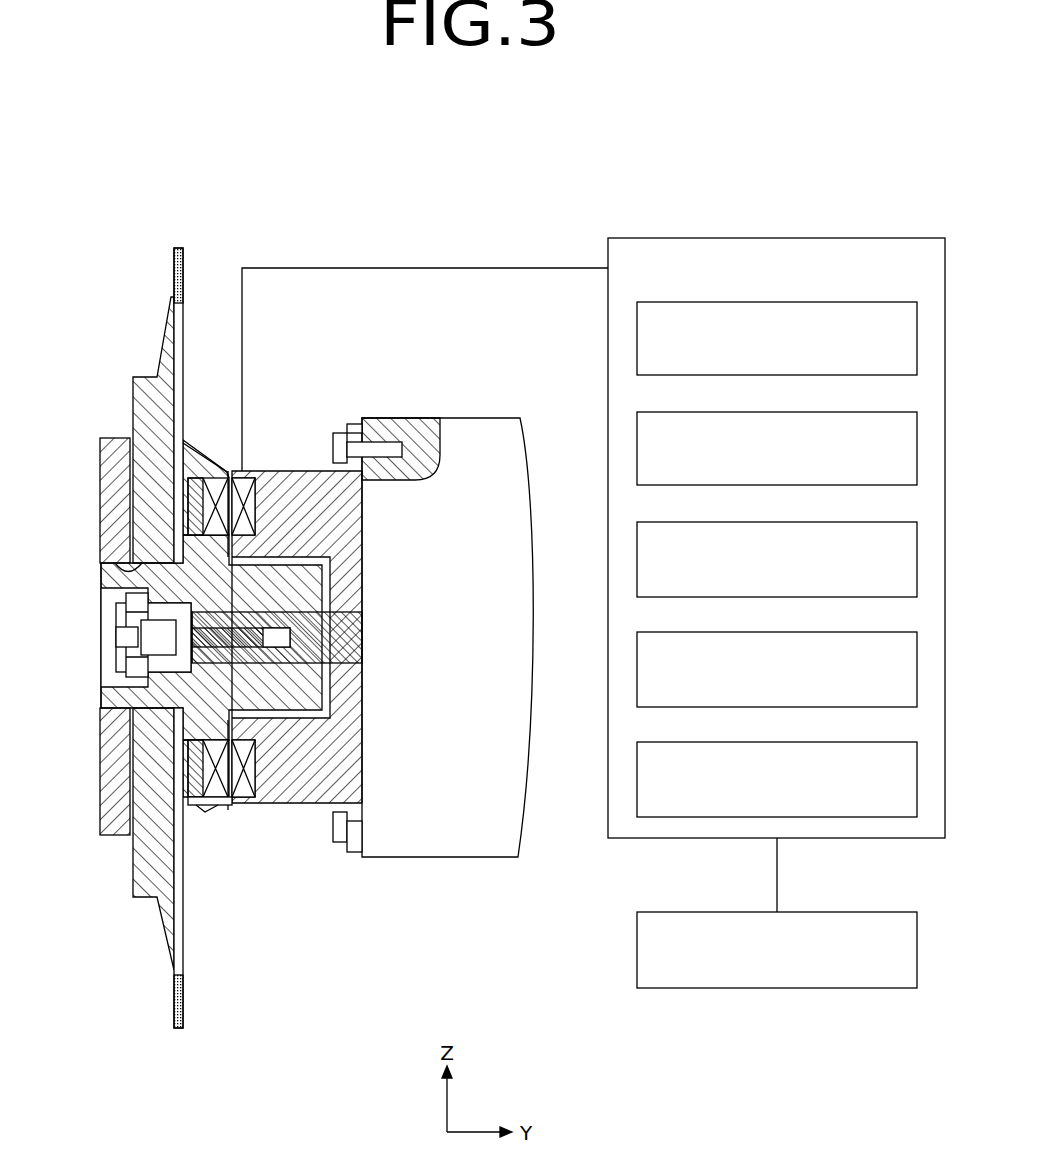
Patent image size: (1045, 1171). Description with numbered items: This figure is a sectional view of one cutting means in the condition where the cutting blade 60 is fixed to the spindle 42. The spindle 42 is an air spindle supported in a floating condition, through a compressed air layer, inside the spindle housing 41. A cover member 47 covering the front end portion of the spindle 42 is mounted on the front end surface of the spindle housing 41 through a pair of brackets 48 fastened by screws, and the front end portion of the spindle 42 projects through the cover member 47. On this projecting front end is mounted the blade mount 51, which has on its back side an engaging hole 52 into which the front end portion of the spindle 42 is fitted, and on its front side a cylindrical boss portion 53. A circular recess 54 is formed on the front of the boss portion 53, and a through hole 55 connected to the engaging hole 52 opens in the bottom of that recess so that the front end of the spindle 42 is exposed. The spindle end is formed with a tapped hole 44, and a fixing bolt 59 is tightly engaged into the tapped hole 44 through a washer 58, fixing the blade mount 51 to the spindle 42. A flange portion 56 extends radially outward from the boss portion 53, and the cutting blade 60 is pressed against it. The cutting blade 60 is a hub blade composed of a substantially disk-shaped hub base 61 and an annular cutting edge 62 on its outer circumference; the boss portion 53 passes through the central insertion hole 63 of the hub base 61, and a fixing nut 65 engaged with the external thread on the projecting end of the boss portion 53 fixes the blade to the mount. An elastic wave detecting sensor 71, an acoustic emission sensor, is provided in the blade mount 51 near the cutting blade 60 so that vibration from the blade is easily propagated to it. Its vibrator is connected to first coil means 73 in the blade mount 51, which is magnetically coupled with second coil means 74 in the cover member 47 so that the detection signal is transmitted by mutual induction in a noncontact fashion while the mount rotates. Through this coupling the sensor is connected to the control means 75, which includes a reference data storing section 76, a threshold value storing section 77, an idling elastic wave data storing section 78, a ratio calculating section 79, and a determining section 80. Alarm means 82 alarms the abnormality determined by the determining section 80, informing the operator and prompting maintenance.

The spindle housing 41 is at (474, 430).
The spindle 42 is at (205, 660).
The tapped hole 44 is at (285, 635).
The cover member 47 is at (298, 471).
The brackets 48 is at (343, 433).
The blade mount 51 is at (214, 456).
The engaging hole 52 is at (262, 618).
The boss portion 53 is at (101, 576).
The circular recess 54 is at (116, 675).
The through hole 55 is at (141, 630).
The flange portion 56 is at (186, 446).
The washer 58 is at (126, 600).
The fixing bolt 59 is at (116, 650).
The cutting blade 60 is at (117, 234).
The hub base 61 is at (157, 345).
The cutting edge 62 is at (174, 253).
The insertion hole 63 is at (137, 570).
The fixing nut 65 is at (104, 462).
The elastic wave detecting sensor 71 is at (196, 806).
The first coil means 73 is at (207, 806).
The second coil means 74 is at (236, 806).
The control means 75 is at (838, 238).
The reference data storing section 76 is at (855, 302).
The threshold value storing section 77 is at (848, 412).
The idling elastic wave data storing section 78 is at (850, 522).
The ratio calculating section 79 is at (856, 632).
The determining section 80 is at (848, 742).
The alarm means 82 is at (873, 912).